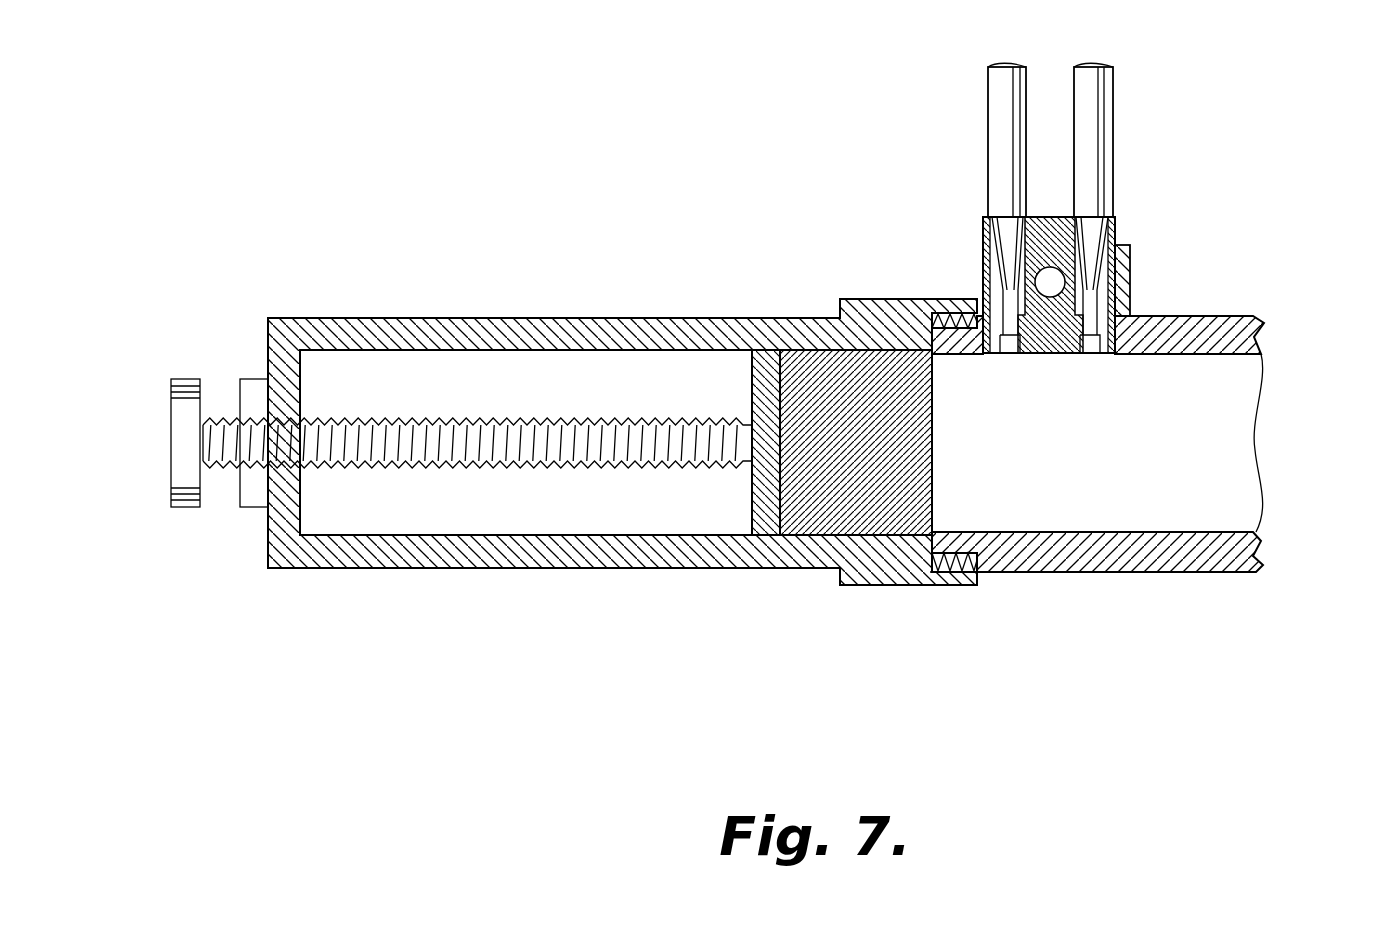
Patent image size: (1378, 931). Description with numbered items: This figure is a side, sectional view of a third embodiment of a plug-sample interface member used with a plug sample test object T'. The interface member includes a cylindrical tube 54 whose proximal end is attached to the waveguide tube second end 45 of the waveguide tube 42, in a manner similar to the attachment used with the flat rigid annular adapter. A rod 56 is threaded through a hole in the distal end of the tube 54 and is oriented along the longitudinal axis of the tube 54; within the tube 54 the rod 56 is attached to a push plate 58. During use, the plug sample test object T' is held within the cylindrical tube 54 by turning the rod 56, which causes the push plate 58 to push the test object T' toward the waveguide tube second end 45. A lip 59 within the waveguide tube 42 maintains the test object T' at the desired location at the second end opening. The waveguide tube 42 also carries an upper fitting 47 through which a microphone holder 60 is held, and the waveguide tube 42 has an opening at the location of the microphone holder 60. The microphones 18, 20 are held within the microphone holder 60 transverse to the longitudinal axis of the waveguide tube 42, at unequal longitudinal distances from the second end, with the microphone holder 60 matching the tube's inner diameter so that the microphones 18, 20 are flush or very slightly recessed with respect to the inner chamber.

The microphone 18 is at (1001, 67).
The microphone 20 is at (1088, 67).
The waveguide tube 42 is at (1250, 318).
The waveguide tube second end 45 is at (983, 570).
The upper fitting 47 is at (1130, 270).
The cylindrical tube 54 is at (390, 317).
The rod 56 is at (228, 422).
The push plate 58 is at (765, 350).
The lip 59 is at (927, 340).
The microphone holder 60 is at (985, 232).
The plug sample test object T' is at (856, 383).